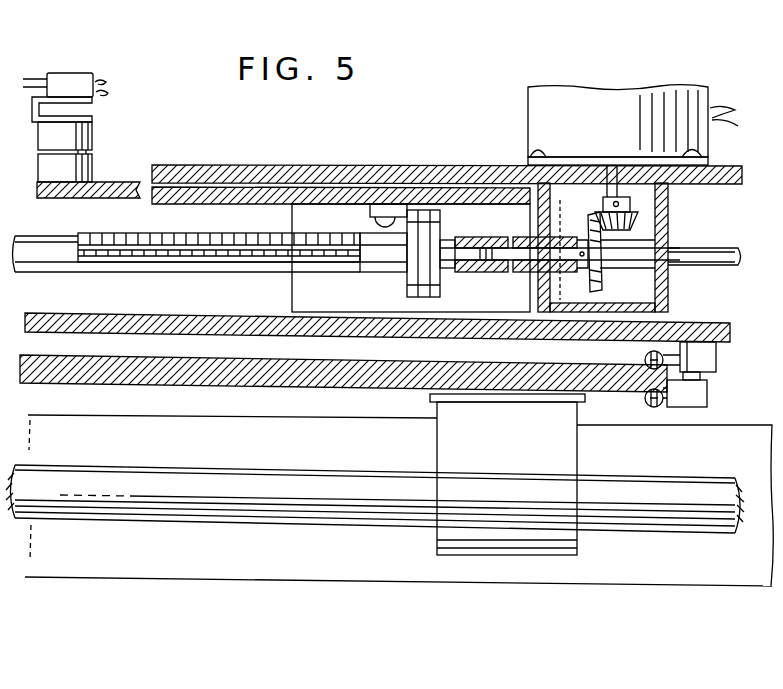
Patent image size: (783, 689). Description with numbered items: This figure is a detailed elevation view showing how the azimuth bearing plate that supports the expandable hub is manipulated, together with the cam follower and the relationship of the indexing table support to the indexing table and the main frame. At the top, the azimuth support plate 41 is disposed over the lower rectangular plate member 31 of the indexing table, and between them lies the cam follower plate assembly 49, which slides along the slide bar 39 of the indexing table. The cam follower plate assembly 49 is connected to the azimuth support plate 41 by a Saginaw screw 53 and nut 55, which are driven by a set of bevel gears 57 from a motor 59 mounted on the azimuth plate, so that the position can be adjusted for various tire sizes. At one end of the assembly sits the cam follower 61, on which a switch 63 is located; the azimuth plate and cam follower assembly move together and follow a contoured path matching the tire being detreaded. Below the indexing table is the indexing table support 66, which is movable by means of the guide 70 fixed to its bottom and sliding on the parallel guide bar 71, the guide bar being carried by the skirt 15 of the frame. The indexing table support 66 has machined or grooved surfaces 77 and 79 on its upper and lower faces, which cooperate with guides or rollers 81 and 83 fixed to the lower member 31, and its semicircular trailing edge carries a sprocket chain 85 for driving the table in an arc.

The skirt 15 is at (463, 576).
The lower rectangular plate member 31 is at (725, 325).
The slide bar 39 is at (712, 254).
The azimuth support plate 41 is at (328, 165).
The cam follower plate assembly 49 is at (118, 185).
The Saginaw screw 53 is at (262, 240).
The nut 55 is at (400, 268).
The bevel gears 57 is at (605, 235).
The motor 59 is at (537, 126).
The cam follower 61 is at (47, 138).
The switch 63 is at (84, 77).
The indexing table support 66 is at (225, 381).
The guide 70 is at (572, 532).
The guide bar 71 is at (339, 526).
The machined surface 77 is at (620, 396).
The machined surface 79 is at (644, 364).
The guide 81 is at (716, 358).
The guide 83 is at (657, 410).
The sprocket chain 85 is at (707, 388).